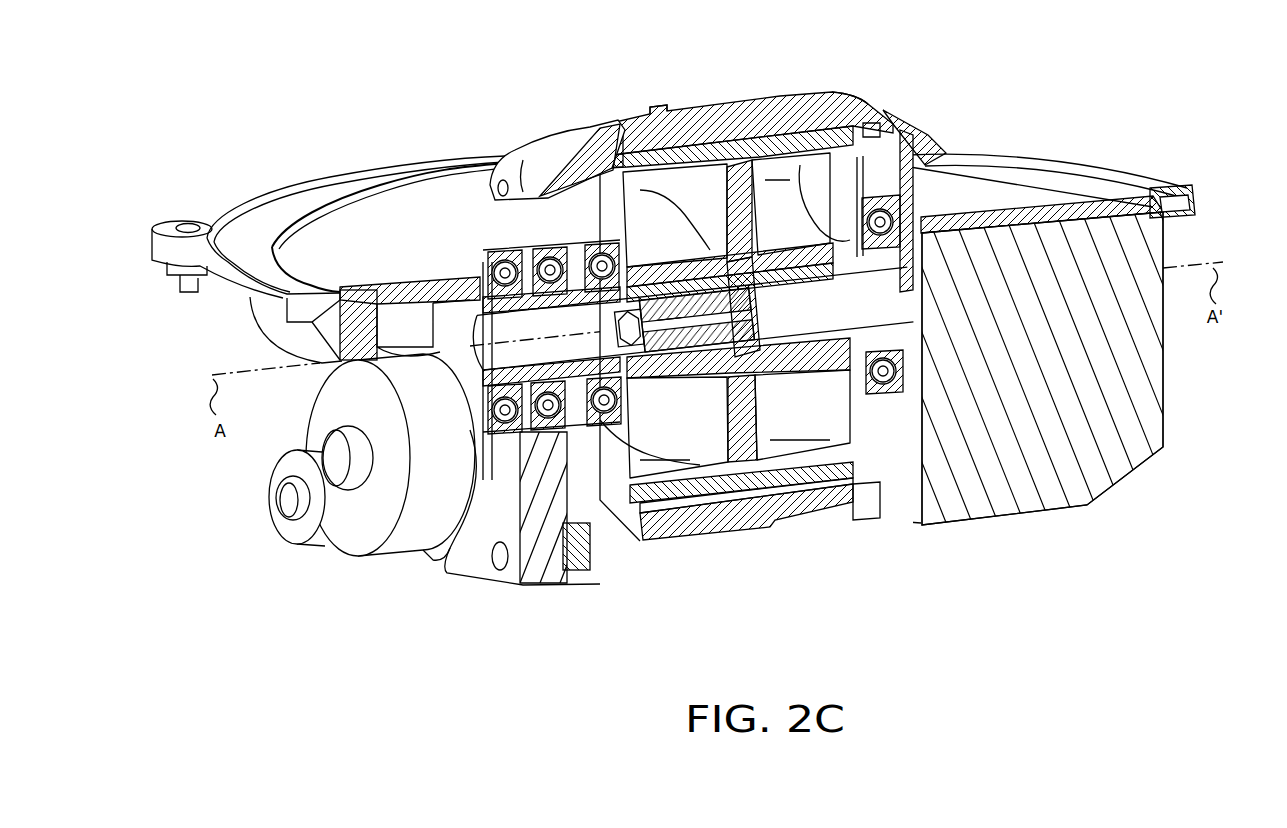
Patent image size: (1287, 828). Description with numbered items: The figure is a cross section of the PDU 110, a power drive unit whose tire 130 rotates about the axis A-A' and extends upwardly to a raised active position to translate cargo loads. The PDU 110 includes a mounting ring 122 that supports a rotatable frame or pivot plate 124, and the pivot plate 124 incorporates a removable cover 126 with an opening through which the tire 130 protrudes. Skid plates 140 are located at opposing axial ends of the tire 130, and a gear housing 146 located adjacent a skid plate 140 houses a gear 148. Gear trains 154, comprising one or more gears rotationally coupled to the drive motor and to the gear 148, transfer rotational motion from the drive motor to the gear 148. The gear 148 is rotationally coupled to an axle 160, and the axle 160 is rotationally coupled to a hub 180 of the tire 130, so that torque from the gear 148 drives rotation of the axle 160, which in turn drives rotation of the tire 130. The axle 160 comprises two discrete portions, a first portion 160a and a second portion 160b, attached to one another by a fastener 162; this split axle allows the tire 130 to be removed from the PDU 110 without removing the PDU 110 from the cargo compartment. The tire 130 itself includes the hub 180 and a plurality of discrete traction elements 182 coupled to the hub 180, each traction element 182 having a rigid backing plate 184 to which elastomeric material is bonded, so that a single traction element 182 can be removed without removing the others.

The PDU 110 is at (262, 122).
The mounting ring 122 is at (1200, 197).
The pivot plate 124 is at (1133, 180).
The removable cover 126 is at (1043, 190).
The tire 130 is at (713, 92).
The skid plate 140 is at (563, 157).
The gear housing 146 is at (457, 252).
The gear 148 is at (510, 233).
The gear train 154 is at (390, 497).
The axle 160 is at (468, 367).
The first portion 160a is at (798, 347).
The second portion 160b is at (627, 380).
The fastener 162 is at (680, 328).
The hub 180 is at (740, 183).
The traction element 182 is at (655, 133).
The backing plate 184 is at (697, 150).